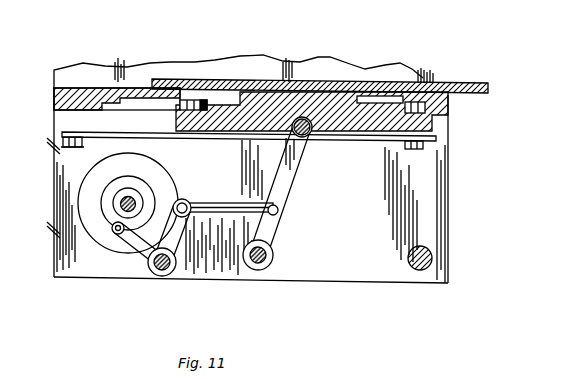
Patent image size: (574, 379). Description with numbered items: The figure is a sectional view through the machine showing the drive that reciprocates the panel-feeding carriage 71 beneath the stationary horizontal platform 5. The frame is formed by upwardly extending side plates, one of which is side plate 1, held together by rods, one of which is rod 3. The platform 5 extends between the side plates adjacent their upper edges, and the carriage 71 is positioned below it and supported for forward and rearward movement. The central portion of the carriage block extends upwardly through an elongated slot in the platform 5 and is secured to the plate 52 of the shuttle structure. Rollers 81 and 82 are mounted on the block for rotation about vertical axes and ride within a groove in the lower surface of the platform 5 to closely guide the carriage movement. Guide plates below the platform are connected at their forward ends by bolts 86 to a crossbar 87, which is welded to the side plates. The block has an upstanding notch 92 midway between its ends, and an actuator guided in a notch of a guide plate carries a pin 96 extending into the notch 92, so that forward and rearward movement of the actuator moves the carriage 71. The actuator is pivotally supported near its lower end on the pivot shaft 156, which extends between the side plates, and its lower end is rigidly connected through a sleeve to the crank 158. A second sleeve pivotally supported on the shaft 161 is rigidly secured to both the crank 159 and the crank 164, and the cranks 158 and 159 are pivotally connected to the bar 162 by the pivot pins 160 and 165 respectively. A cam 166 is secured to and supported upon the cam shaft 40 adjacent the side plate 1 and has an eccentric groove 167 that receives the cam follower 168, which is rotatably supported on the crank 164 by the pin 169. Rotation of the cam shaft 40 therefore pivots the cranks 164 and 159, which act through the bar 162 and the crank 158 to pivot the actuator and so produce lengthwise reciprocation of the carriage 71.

The side plate 1 is at (247, 169).
The rod 3 is at (432, 254).
The platform 5 is at (87, 100).
The cam shaft 40 is at (134, 202).
The plate 52 is at (160, 86).
The carriage 71 is at (392, 150).
The roller 81 is at (420, 83).
The roller 82 is at (207, 106).
The bolt 86 is at (80, 144).
The crossbar 87 is at (74, 141).
The notch 92 is at (303, 119).
The pin 96 is at (318, 118).
The pivot shaft 156 is at (266, 256).
The crank 158 is at (279, 209).
The crank 159 is at (174, 234).
The pivot pin 160 is at (271, 203).
The shaft 161 is at (167, 270).
The bar 162 is at (235, 201).
The crank 164 is at (146, 243).
The pivot pin 165 is at (185, 203).
The cam 166 is at (96, 197).
The eccentric groove 167 is at (127, 176).
The cam follower 168 is at (113, 235).
The pin 169 is at (119, 235).